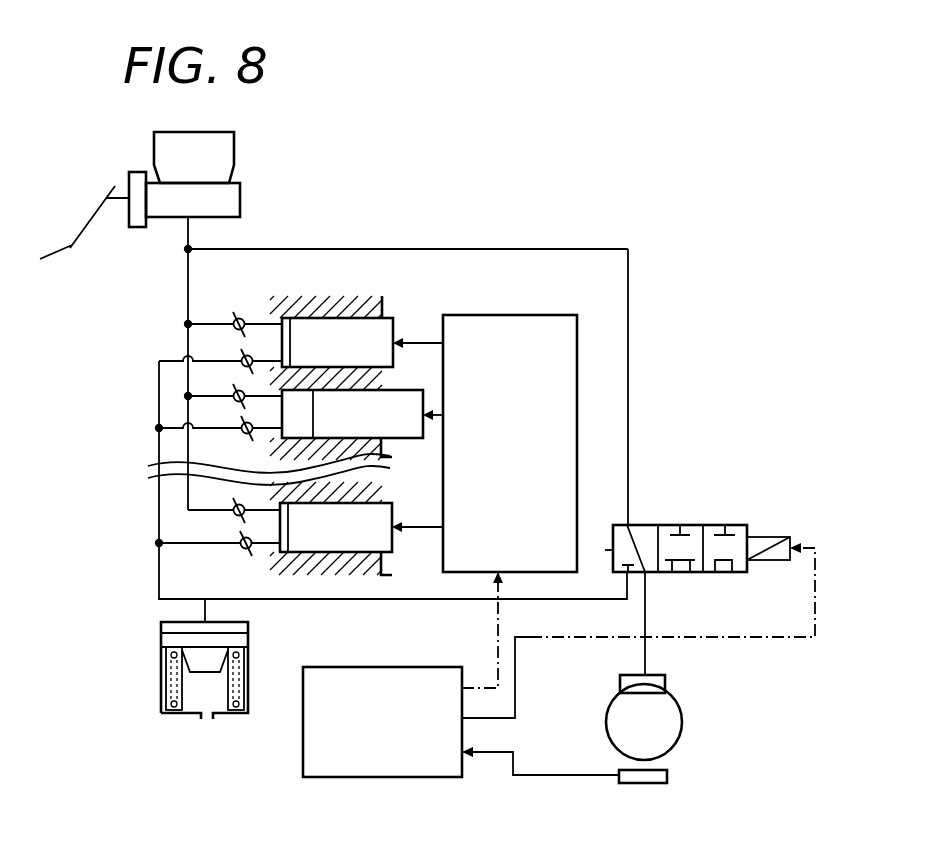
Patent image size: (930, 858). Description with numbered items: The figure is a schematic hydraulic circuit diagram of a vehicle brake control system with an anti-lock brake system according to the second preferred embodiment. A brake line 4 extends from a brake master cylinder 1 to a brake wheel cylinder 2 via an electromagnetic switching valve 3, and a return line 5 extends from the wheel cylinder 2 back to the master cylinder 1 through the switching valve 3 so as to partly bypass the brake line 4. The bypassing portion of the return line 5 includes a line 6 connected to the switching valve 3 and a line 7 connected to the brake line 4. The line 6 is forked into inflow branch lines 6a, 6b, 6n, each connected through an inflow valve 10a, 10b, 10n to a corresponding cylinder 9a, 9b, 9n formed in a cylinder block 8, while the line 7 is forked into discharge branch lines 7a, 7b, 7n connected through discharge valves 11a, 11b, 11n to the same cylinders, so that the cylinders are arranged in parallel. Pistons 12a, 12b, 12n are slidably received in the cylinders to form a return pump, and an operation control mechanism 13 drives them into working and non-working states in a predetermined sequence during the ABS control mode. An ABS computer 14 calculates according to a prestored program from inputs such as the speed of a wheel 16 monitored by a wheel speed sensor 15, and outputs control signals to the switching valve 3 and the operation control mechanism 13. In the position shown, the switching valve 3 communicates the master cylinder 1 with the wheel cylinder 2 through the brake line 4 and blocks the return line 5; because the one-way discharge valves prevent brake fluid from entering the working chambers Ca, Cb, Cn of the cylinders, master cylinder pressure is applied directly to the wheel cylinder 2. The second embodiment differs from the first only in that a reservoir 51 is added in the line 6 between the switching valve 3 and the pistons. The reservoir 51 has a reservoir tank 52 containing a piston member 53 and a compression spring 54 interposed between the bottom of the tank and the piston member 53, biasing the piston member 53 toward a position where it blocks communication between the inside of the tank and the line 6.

The brake master cylinder 1 is at (240, 198).
The brake wheel cylinder 2 is at (650, 676).
The electromagnetic switching valve 3 is at (712, 525).
The brake line 4 is at (628, 300).
The return line 5 is at (113, 302).
The line 6 is at (282, 600).
The line 7 is at (188, 265).
The discharge branch line 7a is at (213, 324).
The discharge branch line 7b is at (213, 397).
The discharge branch line 7n is at (213, 511).
The inflow branch line 6a is at (222, 361).
The inflow branch line 6b is at (222, 429).
The inflow branch line 6n is at (222, 544).
The cylinder block 8 is at (390, 300).
The cylinder 9a is at (353, 318).
The cylinder 9b is at (307, 400).
The cylinder 9n is at (353, 552).
The inflow valve 10a is at (243, 351).
The inflow valve 10b is at (252, 442).
The inflow valve 10n is at (240, 557).
The discharge valve 11a is at (233, 312).
The discharge valve 11b is at (233, 385).
The discharge valve 11n is at (233, 499).
The piston 12a is at (402, 330).
The piston 12b is at (423, 345).
The piston 12n is at (388, 552).
The operation control mechanism 13 is at (534, 314).
The ABS computer 14 is at (360, 778).
The wheel speed sensor 15 is at (668, 776).
The wheel 16 is at (684, 718).
The reservoir 51 is at (158, 666).
The reservoir tank 52 is at (166, 626).
The piston member 53 is at (200, 660).
The compression spring 54 is at (222, 685).
The working chamber Ca is at (298, 420).
The working chamber Cb is at (306, 412).
The working chamber Cn is at (288, 535).